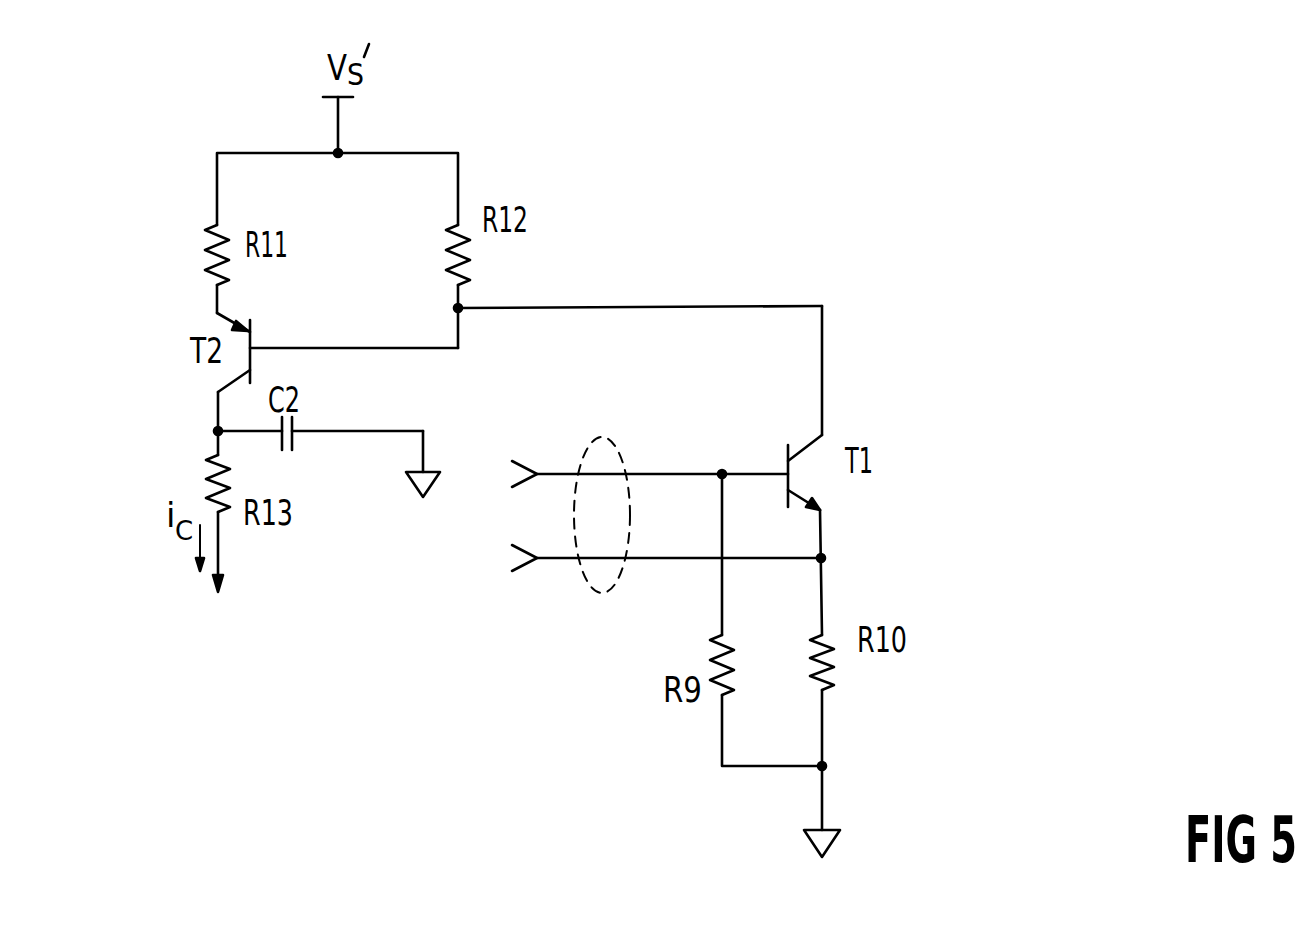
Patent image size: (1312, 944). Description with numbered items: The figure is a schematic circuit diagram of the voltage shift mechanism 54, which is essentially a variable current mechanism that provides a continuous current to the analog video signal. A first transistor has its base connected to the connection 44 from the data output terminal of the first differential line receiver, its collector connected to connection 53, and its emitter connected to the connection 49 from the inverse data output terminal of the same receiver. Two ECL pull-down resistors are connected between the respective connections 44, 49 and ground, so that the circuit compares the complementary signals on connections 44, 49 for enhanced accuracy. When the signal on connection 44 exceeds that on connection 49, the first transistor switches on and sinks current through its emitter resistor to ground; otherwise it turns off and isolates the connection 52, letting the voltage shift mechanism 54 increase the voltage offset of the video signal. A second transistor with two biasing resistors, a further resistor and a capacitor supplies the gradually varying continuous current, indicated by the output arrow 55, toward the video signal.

The connection from the data output terminal 44 is at (590, 410).
The connection from the inverse data output terminal 49 is at (555, 560).
The connection 52 is at (604, 458).
The connection 53 is at (822, 378).
The voltage shift mechanism 54 is at (926, 140).
The output current ic 55 is at (243, 552).